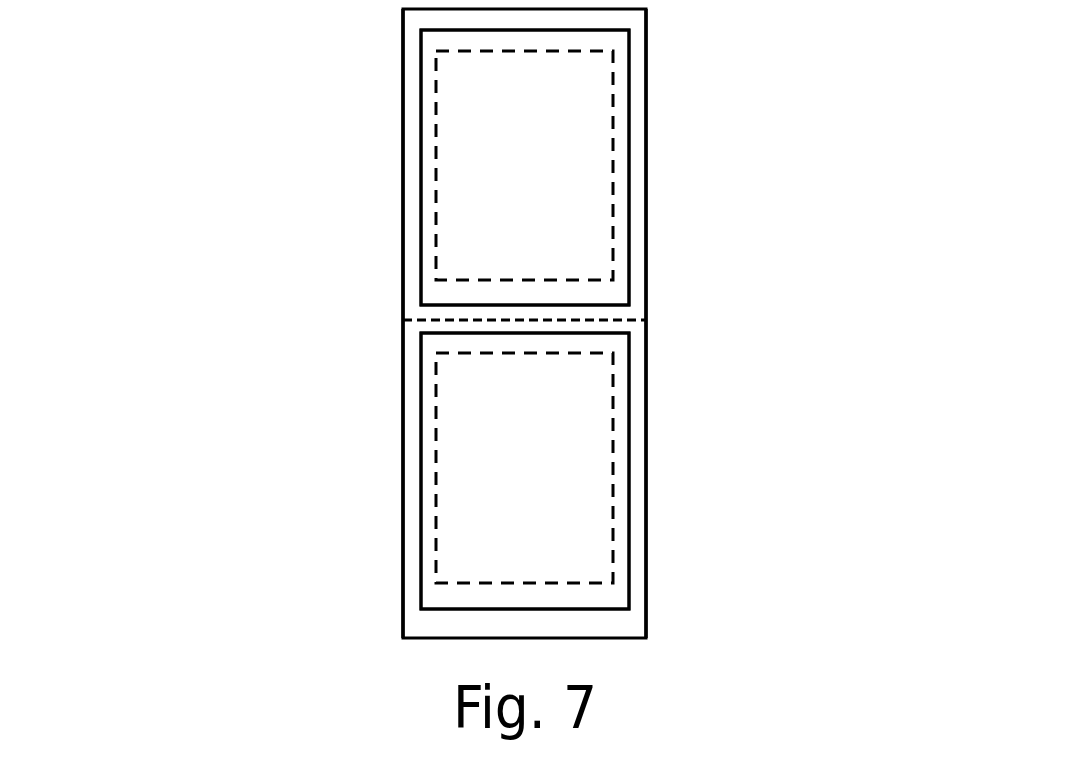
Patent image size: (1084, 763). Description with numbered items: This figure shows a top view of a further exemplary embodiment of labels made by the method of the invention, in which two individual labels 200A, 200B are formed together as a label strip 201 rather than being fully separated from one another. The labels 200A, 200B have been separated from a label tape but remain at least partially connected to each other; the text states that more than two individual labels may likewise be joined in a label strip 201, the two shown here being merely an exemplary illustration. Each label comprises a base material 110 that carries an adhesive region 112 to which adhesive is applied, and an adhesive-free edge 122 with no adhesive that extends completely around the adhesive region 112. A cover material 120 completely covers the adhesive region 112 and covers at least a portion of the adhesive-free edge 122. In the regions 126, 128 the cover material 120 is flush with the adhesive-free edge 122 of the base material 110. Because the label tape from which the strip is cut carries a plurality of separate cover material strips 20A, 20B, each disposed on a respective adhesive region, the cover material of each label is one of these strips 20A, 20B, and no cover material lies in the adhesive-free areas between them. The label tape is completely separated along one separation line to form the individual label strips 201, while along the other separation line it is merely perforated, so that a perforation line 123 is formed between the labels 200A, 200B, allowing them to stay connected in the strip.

The label strip 201 is at (138, 200).
The label 200A is at (474, 188).
The label 200B is at (661, 471).
The base material 110 is at (637, 56).
The adhesive region 112 is at (468, 162).
The cover material 120 is at (427, 293).
The adhesive-free edge 122 is at (400, 214).
The fold line 123 is at (646, 320).
The region 126 is at (383, 262).
The region 128 is at (676, 168).
The cover material strip 20A is at (620, 142).
The cover material strip 20B is at (618, 492).